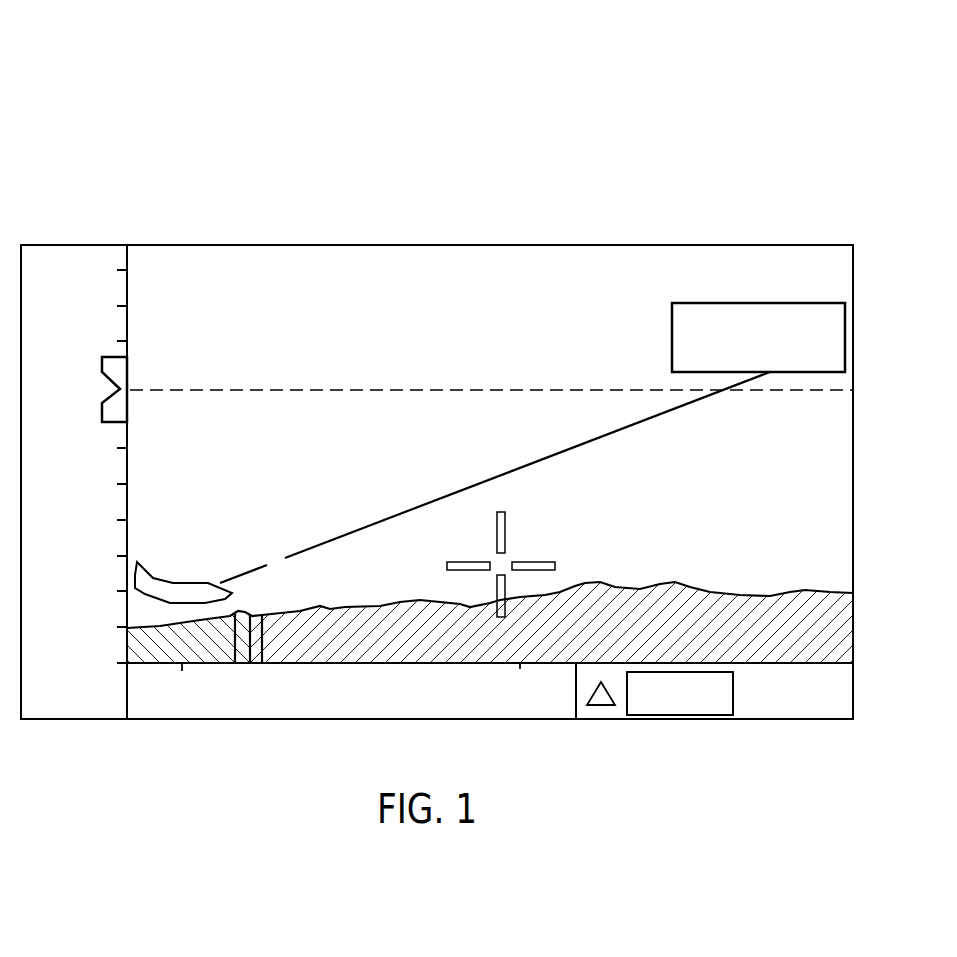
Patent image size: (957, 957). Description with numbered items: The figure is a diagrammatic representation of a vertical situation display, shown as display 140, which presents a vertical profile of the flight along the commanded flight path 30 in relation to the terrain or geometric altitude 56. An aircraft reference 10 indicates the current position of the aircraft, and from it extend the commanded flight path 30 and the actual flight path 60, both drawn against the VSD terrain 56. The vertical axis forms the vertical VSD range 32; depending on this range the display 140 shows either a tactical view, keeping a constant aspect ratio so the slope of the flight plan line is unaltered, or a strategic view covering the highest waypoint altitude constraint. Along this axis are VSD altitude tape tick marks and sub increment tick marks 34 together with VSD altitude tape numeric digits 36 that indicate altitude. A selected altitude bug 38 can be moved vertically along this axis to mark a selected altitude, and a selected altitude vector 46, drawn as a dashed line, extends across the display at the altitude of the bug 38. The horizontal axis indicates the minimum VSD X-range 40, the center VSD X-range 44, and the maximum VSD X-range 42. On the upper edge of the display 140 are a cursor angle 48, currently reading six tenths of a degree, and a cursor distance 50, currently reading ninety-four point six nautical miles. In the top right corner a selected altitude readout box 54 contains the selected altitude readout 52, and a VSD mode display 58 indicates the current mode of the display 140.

The display 140 is at (202, 128).
The vertical VSD range 32 is at (122, 269).
The VSD altitude tape sub increment tick marks 34 is at (118, 520).
The VSD altitude tape numeric digits 36 is at (72, 557).
The selected altitude bug 38 is at (132, 367).
The selected altitude vector 46 is at (273, 390).
The commanded flight path 30 is at (428, 500).
The actual flight path 60 is at (240, 577).
The aircraft reference 10 is at (163, 578).
The terrain 56 is at (785, 597).
The cursor distance 50 is at (493, 253).
The cursor angle 48 is at (523, 318).
The selected altitude readout 52 is at (700, 337).
The selected altitude readout box 54 is at (670, 342).
The maximum VSD X-range 42 is at (830, 692).
The minimum VSD X-range 40 is at (182, 702).
The center VSD X-range 44 is at (520, 705).
The VSD mode display 58 is at (697, 716).